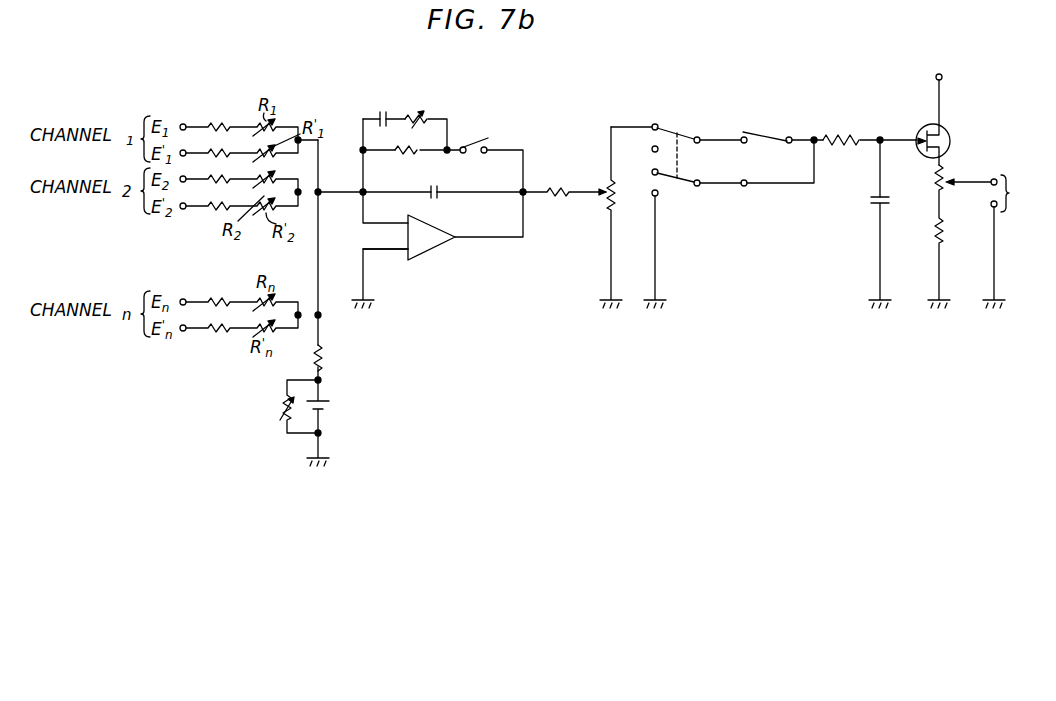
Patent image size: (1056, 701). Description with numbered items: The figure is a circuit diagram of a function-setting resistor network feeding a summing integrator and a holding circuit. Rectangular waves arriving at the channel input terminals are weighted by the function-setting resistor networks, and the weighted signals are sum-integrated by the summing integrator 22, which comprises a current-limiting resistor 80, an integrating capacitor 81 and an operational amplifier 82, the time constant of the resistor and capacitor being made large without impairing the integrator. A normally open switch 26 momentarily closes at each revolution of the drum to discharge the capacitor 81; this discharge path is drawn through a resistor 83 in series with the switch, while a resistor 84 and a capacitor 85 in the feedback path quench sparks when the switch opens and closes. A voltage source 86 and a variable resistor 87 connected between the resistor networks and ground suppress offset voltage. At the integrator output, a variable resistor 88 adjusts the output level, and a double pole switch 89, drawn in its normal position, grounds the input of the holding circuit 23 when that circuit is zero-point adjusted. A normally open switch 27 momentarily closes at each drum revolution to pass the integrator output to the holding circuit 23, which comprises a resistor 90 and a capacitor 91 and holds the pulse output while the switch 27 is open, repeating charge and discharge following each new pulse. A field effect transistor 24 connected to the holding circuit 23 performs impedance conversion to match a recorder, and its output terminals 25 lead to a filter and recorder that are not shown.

The summing integrator 22 is at (465, 245).
The holding circuit 23 is at (872, 168).
The field effect transistor 24 is at (955, 134).
The output terminals 25 is at (993, 241).
The normally open switch 26 is at (479, 140).
The switch 27 is at (765, 134).
The resistor 80 is at (322, 348).
The capacitor 81 is at (438, 199).
The operational amplifier 82 is at (425, 253).
The resistor R1 83 is at (408, 156).
The resistor 84 is at (418, 112).
The capacitor 85 is at (383, 111).
The voltage source 86 is at (332, 400).
The variable resistor 87 is at (285, 407).
The variable resistor 88 is at (614, 198).
The double pole switch 89 is at (679, 180).
The resistor 90 is at (843, 134).
The capacitor 91 is at (890, 200).